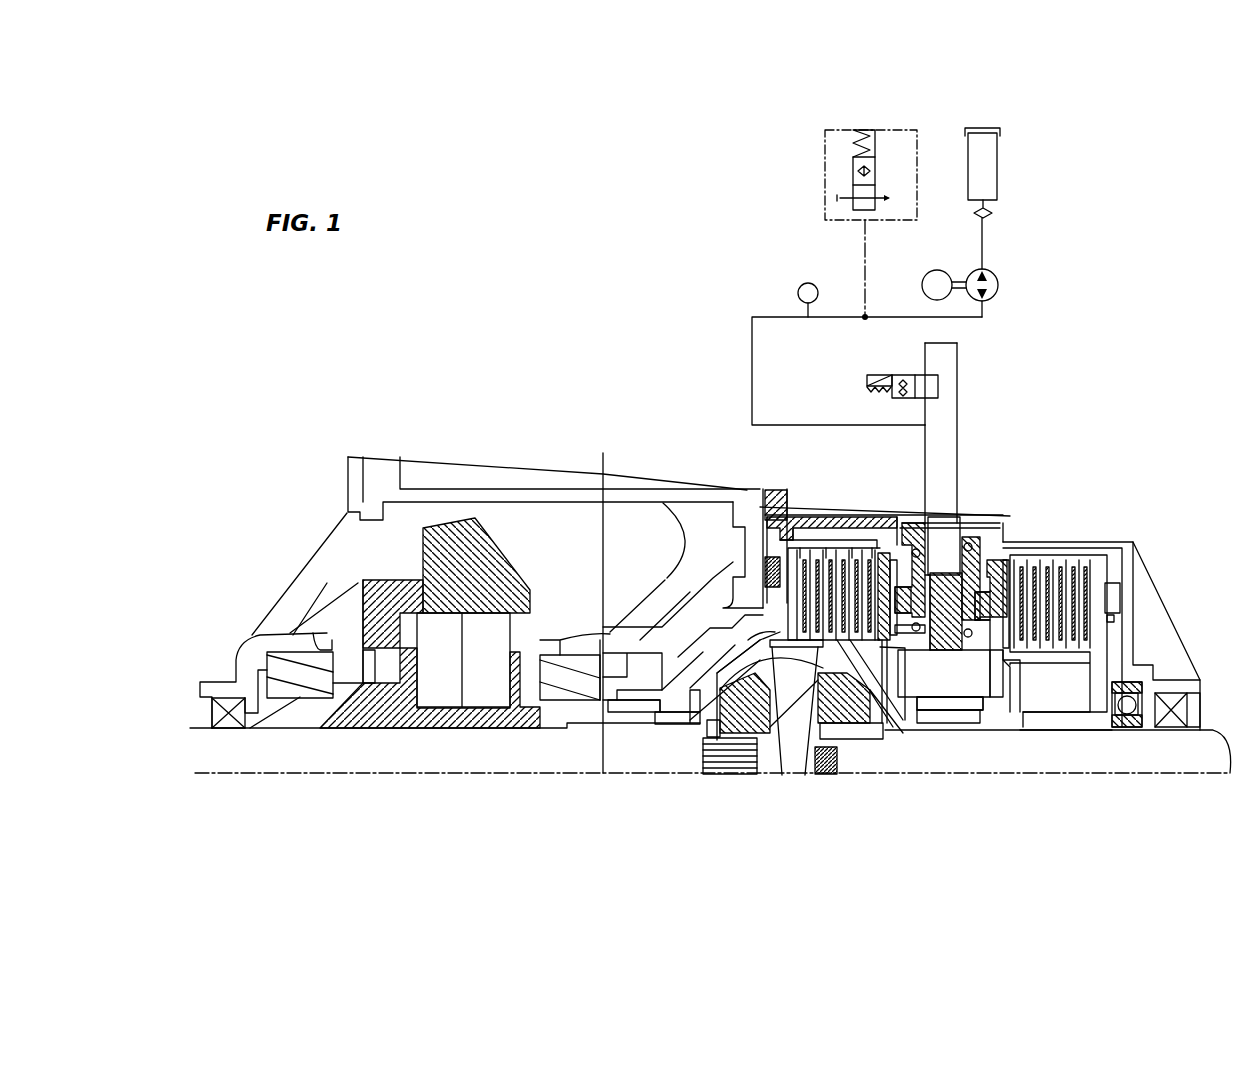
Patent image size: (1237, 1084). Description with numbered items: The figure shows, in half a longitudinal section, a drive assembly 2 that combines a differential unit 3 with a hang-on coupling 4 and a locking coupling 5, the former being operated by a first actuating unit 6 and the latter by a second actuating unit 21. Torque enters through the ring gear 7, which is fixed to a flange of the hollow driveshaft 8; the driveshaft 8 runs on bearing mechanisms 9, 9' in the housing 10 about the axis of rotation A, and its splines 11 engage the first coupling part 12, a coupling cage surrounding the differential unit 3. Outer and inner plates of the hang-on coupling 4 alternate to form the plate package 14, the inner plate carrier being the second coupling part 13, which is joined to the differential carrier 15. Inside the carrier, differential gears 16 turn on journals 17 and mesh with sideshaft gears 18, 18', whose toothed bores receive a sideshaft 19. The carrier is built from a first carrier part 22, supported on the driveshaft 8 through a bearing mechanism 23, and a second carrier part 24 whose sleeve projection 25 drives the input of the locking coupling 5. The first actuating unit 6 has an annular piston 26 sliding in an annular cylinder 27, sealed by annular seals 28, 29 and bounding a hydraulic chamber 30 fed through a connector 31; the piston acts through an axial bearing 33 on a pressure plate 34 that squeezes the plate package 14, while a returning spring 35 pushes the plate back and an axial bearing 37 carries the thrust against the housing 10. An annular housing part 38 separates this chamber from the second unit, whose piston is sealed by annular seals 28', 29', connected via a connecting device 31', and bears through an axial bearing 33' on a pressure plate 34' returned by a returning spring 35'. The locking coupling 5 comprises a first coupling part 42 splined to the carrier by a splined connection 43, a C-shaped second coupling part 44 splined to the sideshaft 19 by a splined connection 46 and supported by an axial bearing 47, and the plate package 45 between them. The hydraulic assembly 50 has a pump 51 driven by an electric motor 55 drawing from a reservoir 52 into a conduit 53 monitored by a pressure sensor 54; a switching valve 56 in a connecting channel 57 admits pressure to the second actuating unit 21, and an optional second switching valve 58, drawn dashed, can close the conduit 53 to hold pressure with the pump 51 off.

The drive assembly 2 is at (547, 300).
The differential unit 3 is at (767, 790).
The hang-on coupling 4 is at (843, 513).
The locking coupling 5 is at (1072, 538).
The first actuating unit 6 is at (940, 468).
The ring gear 7 is at (478, 543).
The driveshaft 8 is at (380, 613).
The bearing mechanism 9 is at (312, 740).
The bearing mechanism 9' is at (575, 626).
The housing 10 is at (257, 650).
The splines 11 is at (628, 712).
The first coupling part 12 is at (790, 553).
The second coupling part 13 is at (833, 573).
The plate package 14 is at (813, 570).
The differential carrier 15 is at (843, 730).
The differential gears 16 is at (823, 690).
The journals 17 is at (790, 760).
The sideshaft gear 18 is at (849, 798).
The sideshaft gear 18' is at (730, 780).
The sideshaft 19 is at (1175, 770).
The second actuating unit 21 is at (1006, 468).
The first carrier part 22 is at (708, 677).
The bearing mechanism 23 is at (668, 724).
The second carrier part 24 is at (748, 652).
The sleeve projection 25 is at (940, 717).
The annular piston 26 is at (905, 585).
The annular cylinder 27 is at (898, 660).
The annular seal 28 is at (925, 552).
The annular seal 28' is at (1000, 559).
The annular seal 29 is at (934, 634).
The annular seal 29' is at (971, 657).
The hydraulic chamber 30 is at (933, 612).
The connector 31 is at (951, 503).
The connecting device 31' is at (989, 546).
The axial bearing 33 is at (889, 542).
The axial bearing 33' is at (996, 725).
The pressure plate 34 is at (878, 550).
The pressure plate 34' is at (1039, 566).
The returning spring 35 is at (871, 724).
The returning spring 35' is at (1016, 711).
The axial bearing 37 is at (765, 570).
The annular housing part 38 is at (930, 607).
The first coupling part 42 is at (1035, 660).
The splined connection 43 is at (958, 710).
The second coupling part 44 is at (1103, 637).
The plate package 45 is at (1080, 573).
The splined connection 46 is at (1085, 733).
The axial bearing 47 is at (1115, 600).
The hydraulic assembly 50 is at (1040, 257).
The pump 51 is at (998, 295).
The reservoir 52 is at (998, 177).
The conduit 53 is at (760, 315).
The pressure sensor 54 is at (803, 283).
The electric motor 55 is at (938, 268).
The switching valve 56 is at (940, 380).
The connecting channel 57 is at (958, 348).
The second switching valve 58 is at (822, 160).
The axis of rotation A is at (237, 777).